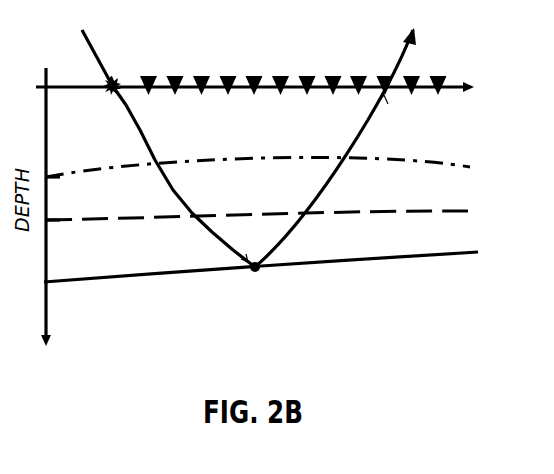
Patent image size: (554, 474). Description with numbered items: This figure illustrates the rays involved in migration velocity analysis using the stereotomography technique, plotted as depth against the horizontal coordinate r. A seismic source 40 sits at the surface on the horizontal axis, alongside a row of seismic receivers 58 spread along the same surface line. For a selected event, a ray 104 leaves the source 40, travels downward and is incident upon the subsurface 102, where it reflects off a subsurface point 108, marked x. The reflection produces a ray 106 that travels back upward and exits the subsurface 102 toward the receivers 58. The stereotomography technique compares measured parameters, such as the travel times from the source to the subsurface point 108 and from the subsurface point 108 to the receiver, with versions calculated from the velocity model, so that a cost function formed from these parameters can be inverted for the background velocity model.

The seismic source 40 is at (118, 75).
The receivers 58 is at (293, 64).
The subsurface 102 is at (345, 252).
The ray 104 is at (137, 121).
The ray 106 is at (358, 134).
The subsurface point 108 is at (252, 276).